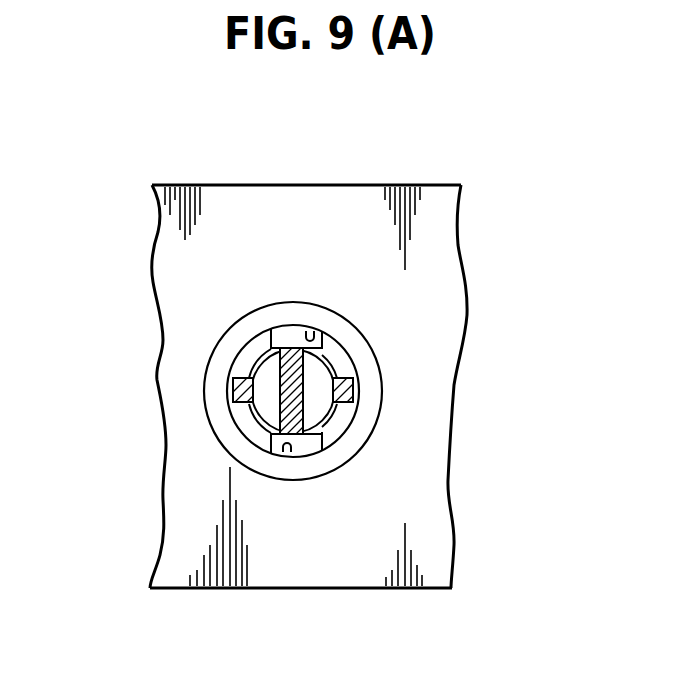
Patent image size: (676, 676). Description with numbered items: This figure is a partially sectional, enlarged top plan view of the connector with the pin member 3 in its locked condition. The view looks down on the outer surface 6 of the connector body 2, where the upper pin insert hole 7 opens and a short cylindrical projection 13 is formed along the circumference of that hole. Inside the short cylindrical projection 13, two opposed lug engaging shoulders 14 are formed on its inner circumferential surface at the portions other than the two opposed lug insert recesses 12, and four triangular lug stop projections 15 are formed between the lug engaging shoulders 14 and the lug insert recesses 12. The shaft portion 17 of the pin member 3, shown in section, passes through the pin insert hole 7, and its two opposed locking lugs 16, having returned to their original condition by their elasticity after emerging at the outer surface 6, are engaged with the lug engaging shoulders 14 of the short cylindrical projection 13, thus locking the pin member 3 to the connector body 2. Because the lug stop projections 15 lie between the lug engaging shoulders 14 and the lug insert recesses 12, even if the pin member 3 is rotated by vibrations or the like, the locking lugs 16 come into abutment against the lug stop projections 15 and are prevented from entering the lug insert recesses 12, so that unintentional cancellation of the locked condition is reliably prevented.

The connector body 2 is at (190, 588).
The pin member 3 is at (282, 338).
The outer surface 6 is at (372, 585).
The pin insert hole 7 is at (341, 468).
The lug insert recess 12 is at (311, 330).
The short cylindrical projection 13 is at (380, 368).
The lug engaging shoulder 14 is at (245, 363).
The lug stop projection 15 is at (267, 347).
The locking lug 16 is at (233, 388).
The shaft portion 17 is at (298, 348).